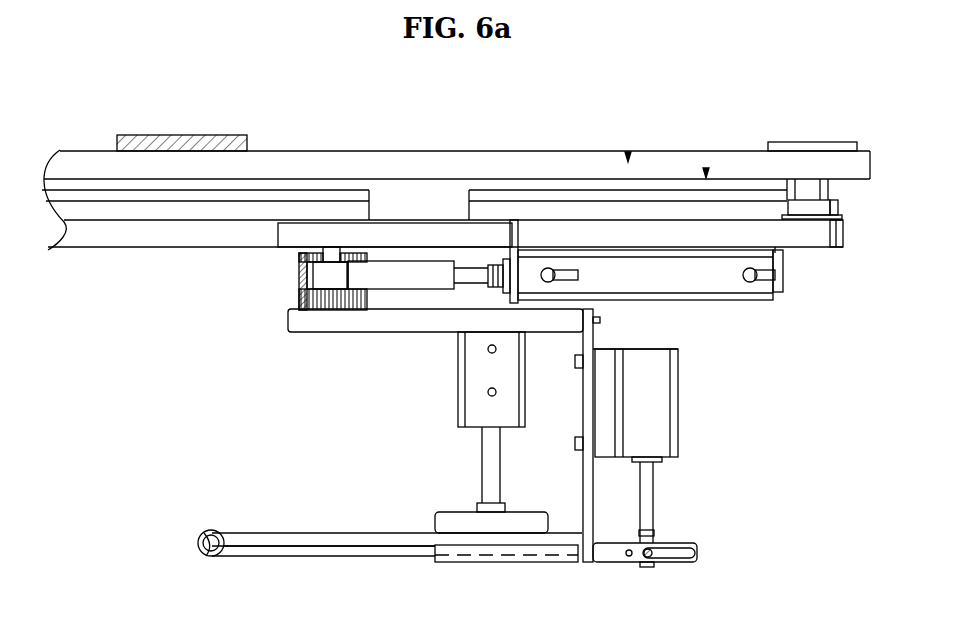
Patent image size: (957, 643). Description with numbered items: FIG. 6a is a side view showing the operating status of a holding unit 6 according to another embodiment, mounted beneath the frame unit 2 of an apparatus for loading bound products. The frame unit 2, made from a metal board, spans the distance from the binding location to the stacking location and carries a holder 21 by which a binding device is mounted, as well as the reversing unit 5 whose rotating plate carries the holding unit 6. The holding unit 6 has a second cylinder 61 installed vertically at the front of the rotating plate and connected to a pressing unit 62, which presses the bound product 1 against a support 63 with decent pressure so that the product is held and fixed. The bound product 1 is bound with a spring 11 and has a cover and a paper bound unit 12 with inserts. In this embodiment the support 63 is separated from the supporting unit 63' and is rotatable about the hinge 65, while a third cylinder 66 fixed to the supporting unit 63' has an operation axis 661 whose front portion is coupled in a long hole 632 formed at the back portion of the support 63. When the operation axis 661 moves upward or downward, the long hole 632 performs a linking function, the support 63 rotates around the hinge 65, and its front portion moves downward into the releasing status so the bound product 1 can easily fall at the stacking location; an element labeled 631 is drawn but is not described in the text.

The bound product 1 is at (387, 570).
The spring 11 is at (208, 560).
The paper bound unit 12 is at (295, 563).
The frame unit 2 is at (305, 146).
The holder 21 is at (190, 134).
The reversing unit 5 is at (260, 293).
The holding unit 6 is at (343, 500).
The second cylinder 61 is at (475, 405).
The pressing unit 62 is at (465, 522).
The support 63 is at (578, 465).
The supporting unit 63' is at (554, 473).
The lower holder 631 is at (487, 563).
The long hole 632 is at (672, 556).
The hinge 65 is at (629, 561).
The third cylinder 66 is at (660, 409).
The operation axis 661 is at (650, 522).